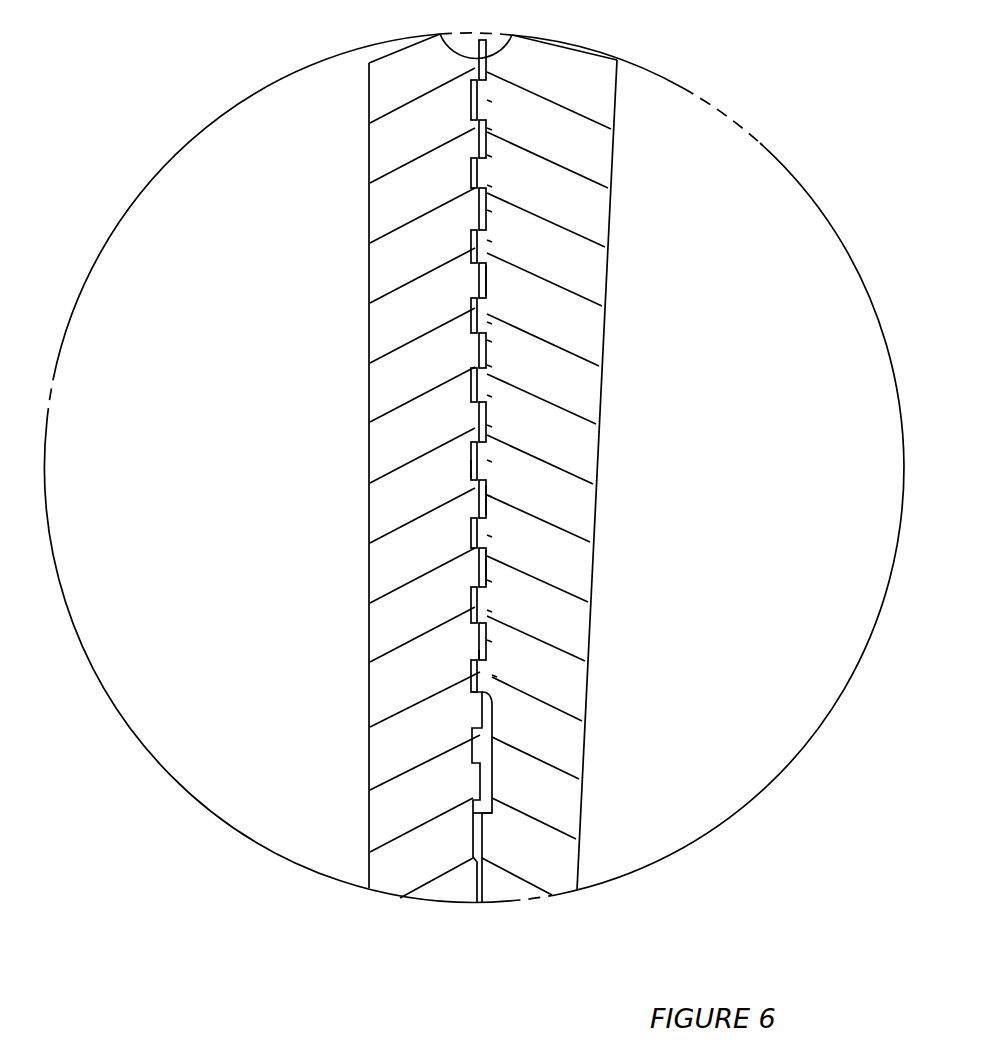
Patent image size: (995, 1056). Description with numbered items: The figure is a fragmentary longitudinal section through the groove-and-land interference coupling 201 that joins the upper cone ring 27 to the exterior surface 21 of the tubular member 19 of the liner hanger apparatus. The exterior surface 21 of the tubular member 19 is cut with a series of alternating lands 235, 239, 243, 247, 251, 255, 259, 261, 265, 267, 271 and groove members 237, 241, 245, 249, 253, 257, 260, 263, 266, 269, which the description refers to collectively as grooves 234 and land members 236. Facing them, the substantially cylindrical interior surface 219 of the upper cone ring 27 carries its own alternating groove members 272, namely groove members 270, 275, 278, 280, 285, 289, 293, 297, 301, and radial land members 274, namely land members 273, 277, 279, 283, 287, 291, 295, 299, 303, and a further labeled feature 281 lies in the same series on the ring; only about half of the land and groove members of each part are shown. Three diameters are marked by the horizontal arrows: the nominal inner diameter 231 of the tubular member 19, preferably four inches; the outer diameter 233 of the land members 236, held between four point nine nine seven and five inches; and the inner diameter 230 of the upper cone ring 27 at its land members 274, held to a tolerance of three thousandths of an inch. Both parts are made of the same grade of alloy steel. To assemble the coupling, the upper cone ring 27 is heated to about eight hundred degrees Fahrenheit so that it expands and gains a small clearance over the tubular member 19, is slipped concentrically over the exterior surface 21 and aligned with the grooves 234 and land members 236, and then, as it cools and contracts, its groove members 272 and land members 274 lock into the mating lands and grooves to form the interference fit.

The tubular member 19 is at (387, 443).
The exterior surface 21 is at (473, 820).
The upper cone ring 27 is at (592, 420).
The groove-and-land interference coupling 201 is at (500, 297).
The interior surface 219 is at (492, 735).
The inner diameter 230 is at (474, 545).
The nominal inner diameter 231 is at (367, 318).
The outer diameter 233 is at (474, 372).
The grooves 234 is at (450, 672).
The land 235 is at (452, 32).
The land members 236 is at (440, 495).
The groove member 237 is at (470, 93).
The land 239 is at (471, 130).
The groove member 241 is at (472, 162).
The land 243 is at (479, 190).
The groove member 245 is at (479, 207).
The land 247 is at (471, 237).
The groove member 249 is at (479, 268).
The land 251 is at (471, 315).
The groove member 253 is at (472, 326).
The land 255 is at (472, 390).
The groove member 257 is at (479, 433).
The land 259 is at (472, 485).
The groove member 260 is at (479, 530).
The land 261 is at (479, 578).
The groove member 263 is at (471, 607).
The land 265 is at (479, 642).
The groove member 266 is at (475, 660).
The land 267 is at (482, 702).
The groove member 269 is at (472, 735).
The groove member 270 is at (493, 34).
The land 271 is at (480, 772).
The groove members 272 is at (512, 555).
The land member 273 is at (487, 103).
The radial land members 274 is at (498, 525).
The groove member 275 is at (487, 133).
The land member 277 is at (487, 163).
The groove member 278 is at (487, 192).
The land member 279 is at (487, 220).
The groove member 280 is at (487, 245).
The land 281 is at (487, 310).
The land member 283 is at (487, 340).
The groove member 285 is at (487, 368).
The land member 287 is at (487, 396).
The groove member 289 is at (487, 440).
The land member 291 is at (487, 470).
The groove member 293 is at (487, 500).
The land member 295 is at (487, 537).
The groove member 297 is at (487, 583).
The land member 299 is at (487, 605).
The groove member 301 is at (487, 640).
The land member 303 is at (492, 678).